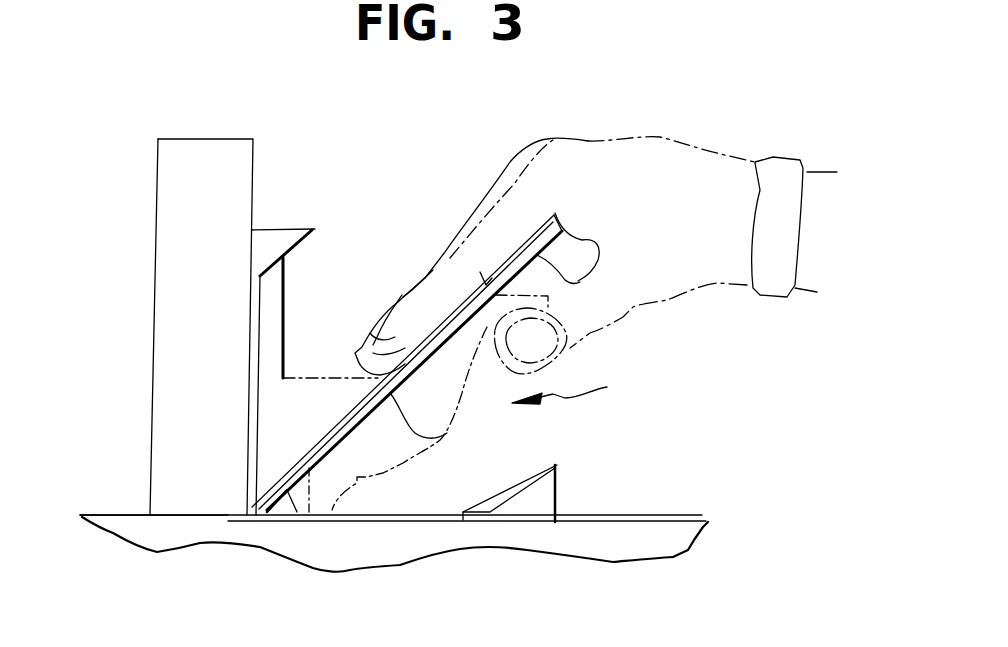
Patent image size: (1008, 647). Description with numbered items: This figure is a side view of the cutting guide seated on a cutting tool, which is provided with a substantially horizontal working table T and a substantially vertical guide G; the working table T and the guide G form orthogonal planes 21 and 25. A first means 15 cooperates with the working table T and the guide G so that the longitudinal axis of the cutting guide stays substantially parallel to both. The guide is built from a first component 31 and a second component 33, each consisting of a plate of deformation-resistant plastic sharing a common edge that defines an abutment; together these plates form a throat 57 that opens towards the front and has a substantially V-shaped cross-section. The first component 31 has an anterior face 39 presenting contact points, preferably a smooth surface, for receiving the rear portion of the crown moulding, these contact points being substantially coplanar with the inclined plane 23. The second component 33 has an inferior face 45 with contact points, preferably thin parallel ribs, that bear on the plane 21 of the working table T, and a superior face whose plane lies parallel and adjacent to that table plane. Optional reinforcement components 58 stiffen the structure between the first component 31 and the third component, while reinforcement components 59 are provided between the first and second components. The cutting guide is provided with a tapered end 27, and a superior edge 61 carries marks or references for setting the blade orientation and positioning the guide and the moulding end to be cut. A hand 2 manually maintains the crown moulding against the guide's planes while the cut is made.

The hand 2 is at (699, 165).
The first means 15 is at (228, 516).
The plane of the working table 21 is at (685, 527).
The inclined plane 23 is at (445, 434).
The plane of the guide 25 is at (252, 168).
The tapered end 27 is at (540, 485).
The first component 31 is at (447, 334).
The second component 33 is at (405, 517).
The anterior face 39 is at (578, 283).
The inferior face 45 is at (372, 522).
The throat 57 is at (575, 388).
The reinforcement components 58 is at (315, 392).
The reinforcement components 59 is at (283, 502).
The superior edge 61 is at (278, 228).
The guide G is at (167, 163).
The working table T is at (633, 537).